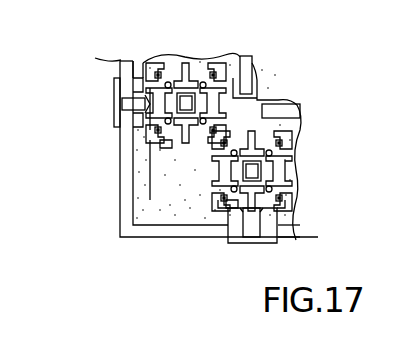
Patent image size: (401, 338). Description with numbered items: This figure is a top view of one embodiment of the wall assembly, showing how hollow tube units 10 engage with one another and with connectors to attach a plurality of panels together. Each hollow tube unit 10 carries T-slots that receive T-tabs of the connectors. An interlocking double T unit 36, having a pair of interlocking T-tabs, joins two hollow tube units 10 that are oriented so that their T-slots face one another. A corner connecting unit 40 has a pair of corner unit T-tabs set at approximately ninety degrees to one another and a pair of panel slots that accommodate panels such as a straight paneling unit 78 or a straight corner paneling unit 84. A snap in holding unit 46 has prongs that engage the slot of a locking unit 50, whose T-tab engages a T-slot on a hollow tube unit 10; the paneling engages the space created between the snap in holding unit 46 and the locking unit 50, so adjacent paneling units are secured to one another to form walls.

The hollow tube unit 10 is at (178, 67).
The interlocking double T unit 36 is at (180, 130).
The corner connecting unit 40 is at (263, 97).
The snap in holding unit 46 is at (115, 104).
The locking unit 50 is at (143, 68).
The straight paneling unit 78 is at (122, 72).
The straight corner paneling unit 84 is at (118, 200).